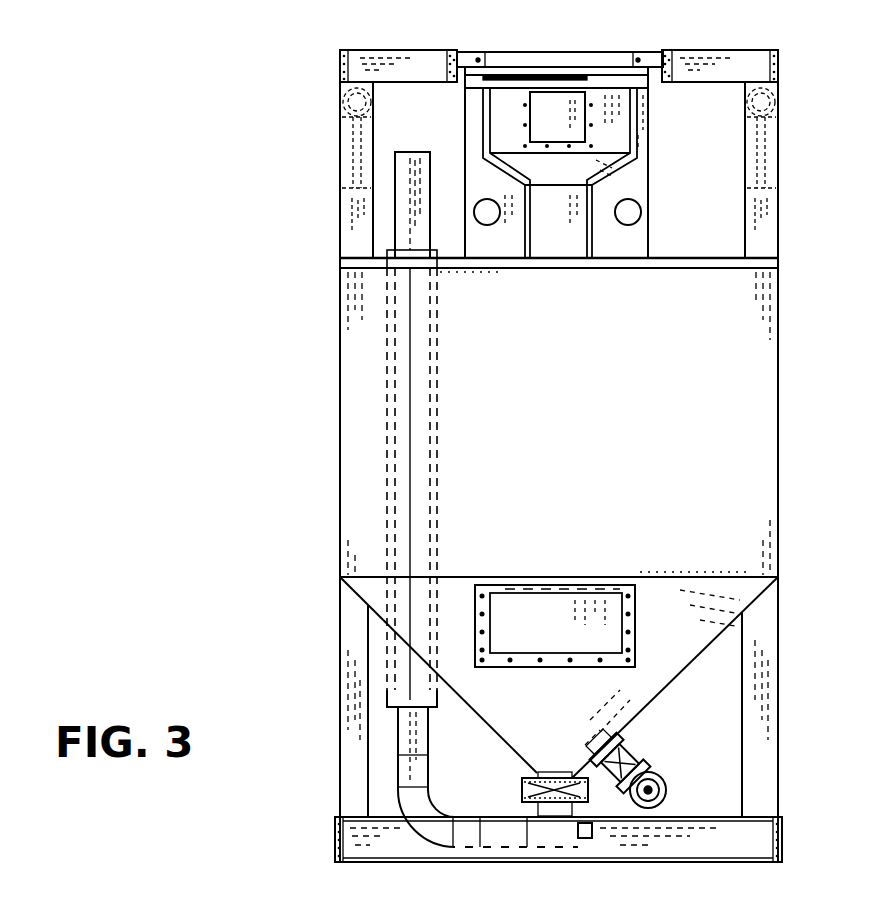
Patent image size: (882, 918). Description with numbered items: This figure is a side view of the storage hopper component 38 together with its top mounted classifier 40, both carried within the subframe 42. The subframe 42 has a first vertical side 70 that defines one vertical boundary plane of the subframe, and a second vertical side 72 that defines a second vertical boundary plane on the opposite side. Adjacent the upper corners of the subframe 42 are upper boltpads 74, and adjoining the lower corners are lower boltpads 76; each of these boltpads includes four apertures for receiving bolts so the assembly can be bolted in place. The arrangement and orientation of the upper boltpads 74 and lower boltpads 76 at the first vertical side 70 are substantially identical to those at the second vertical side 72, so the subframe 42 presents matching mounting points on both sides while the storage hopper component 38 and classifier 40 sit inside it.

The storage hopper component 38 is at (600, 427).
The top mounted classifier 40 is at (632, 188).
The subframe 42 is at (403, 60).
The first vertical side 70 is at (352, 212).
The second vertical side 72 is at (765, 213).
The upper boltpads 74 is at (340, 68).
The lower boltpads 76 is at (335, 838).